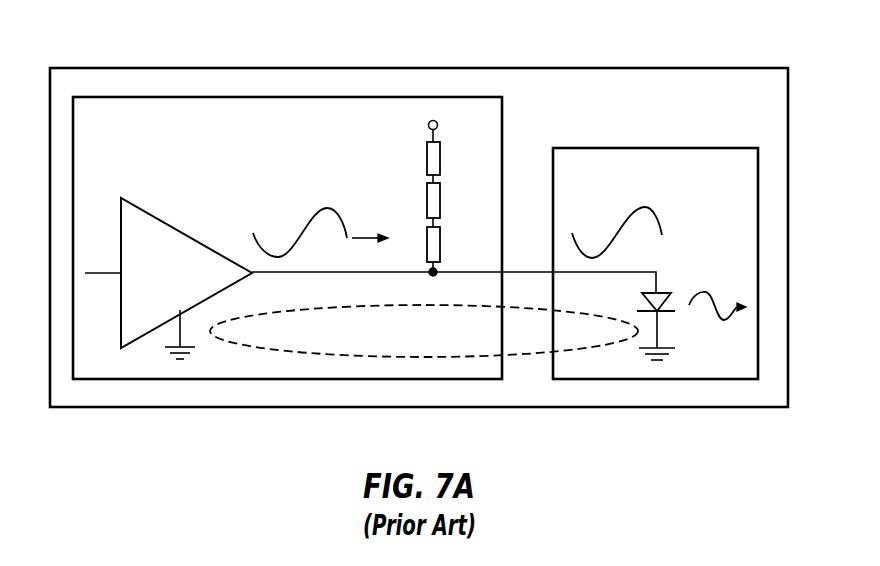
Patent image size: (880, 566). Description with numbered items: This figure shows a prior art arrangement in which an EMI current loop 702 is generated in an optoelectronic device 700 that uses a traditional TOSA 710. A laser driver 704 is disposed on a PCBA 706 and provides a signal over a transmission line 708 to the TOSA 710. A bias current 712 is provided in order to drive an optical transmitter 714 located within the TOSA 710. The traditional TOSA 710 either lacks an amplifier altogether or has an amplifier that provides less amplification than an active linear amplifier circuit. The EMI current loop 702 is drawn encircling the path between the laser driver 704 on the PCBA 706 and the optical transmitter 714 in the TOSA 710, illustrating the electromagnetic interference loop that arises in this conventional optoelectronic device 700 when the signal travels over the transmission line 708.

The optoelectronic device 700 is at (420, 68).
The EMI current loop 702 is at (512, 357).
The laser driver 704 is at (185, 234).
The PCBA 706 is at (305, 134).
The transmission line 708 is at (522, 272).
The TOSA 710 is at (672, 181).
The bias current 712 is at (438, 125).
The optical transmitter 714 is at (657, 293).